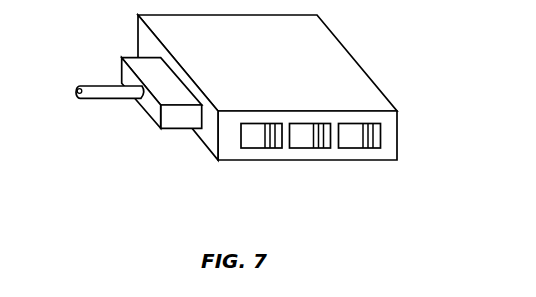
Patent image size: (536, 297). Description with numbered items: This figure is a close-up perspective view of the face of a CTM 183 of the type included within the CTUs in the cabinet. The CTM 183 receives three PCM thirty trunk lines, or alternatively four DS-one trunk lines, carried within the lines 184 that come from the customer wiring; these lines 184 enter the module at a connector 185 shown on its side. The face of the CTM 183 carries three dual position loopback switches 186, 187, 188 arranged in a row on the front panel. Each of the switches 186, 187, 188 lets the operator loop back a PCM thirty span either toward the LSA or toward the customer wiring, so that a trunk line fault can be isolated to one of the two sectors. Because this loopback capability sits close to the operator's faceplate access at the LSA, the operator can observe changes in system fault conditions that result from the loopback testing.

The CTM 183 is at (280, 119).
The lines 184 is at (98, 90).
The connector 185 is at (146, 68).
The dual position loopback switch 186 is at (260, 143).
The dual position loopback switch 187 is at (310, 142).
The dual position loopback switch 188 is at (357, 142).